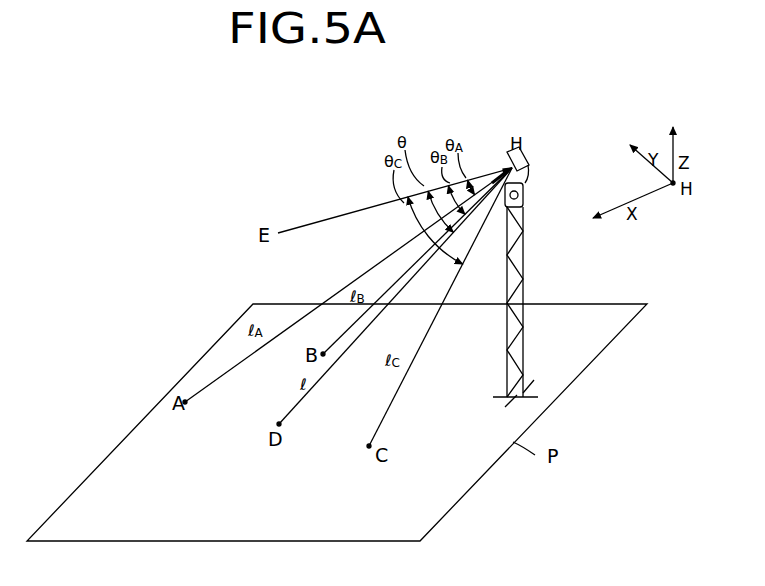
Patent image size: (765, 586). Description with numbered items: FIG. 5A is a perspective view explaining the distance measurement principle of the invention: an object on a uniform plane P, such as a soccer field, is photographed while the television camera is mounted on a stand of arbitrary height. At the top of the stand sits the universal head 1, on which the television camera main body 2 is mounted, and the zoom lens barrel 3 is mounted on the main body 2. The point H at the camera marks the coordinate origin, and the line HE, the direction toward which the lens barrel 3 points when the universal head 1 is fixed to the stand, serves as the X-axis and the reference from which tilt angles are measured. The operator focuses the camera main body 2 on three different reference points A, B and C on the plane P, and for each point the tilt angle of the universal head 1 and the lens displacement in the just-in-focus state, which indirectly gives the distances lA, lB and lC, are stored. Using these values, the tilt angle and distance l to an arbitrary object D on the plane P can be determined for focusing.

The universal head 1 is at (524, 197).
The television camera main body 2 is at (529, 166).
The zoom lens barrel 3 is at (500, 172).